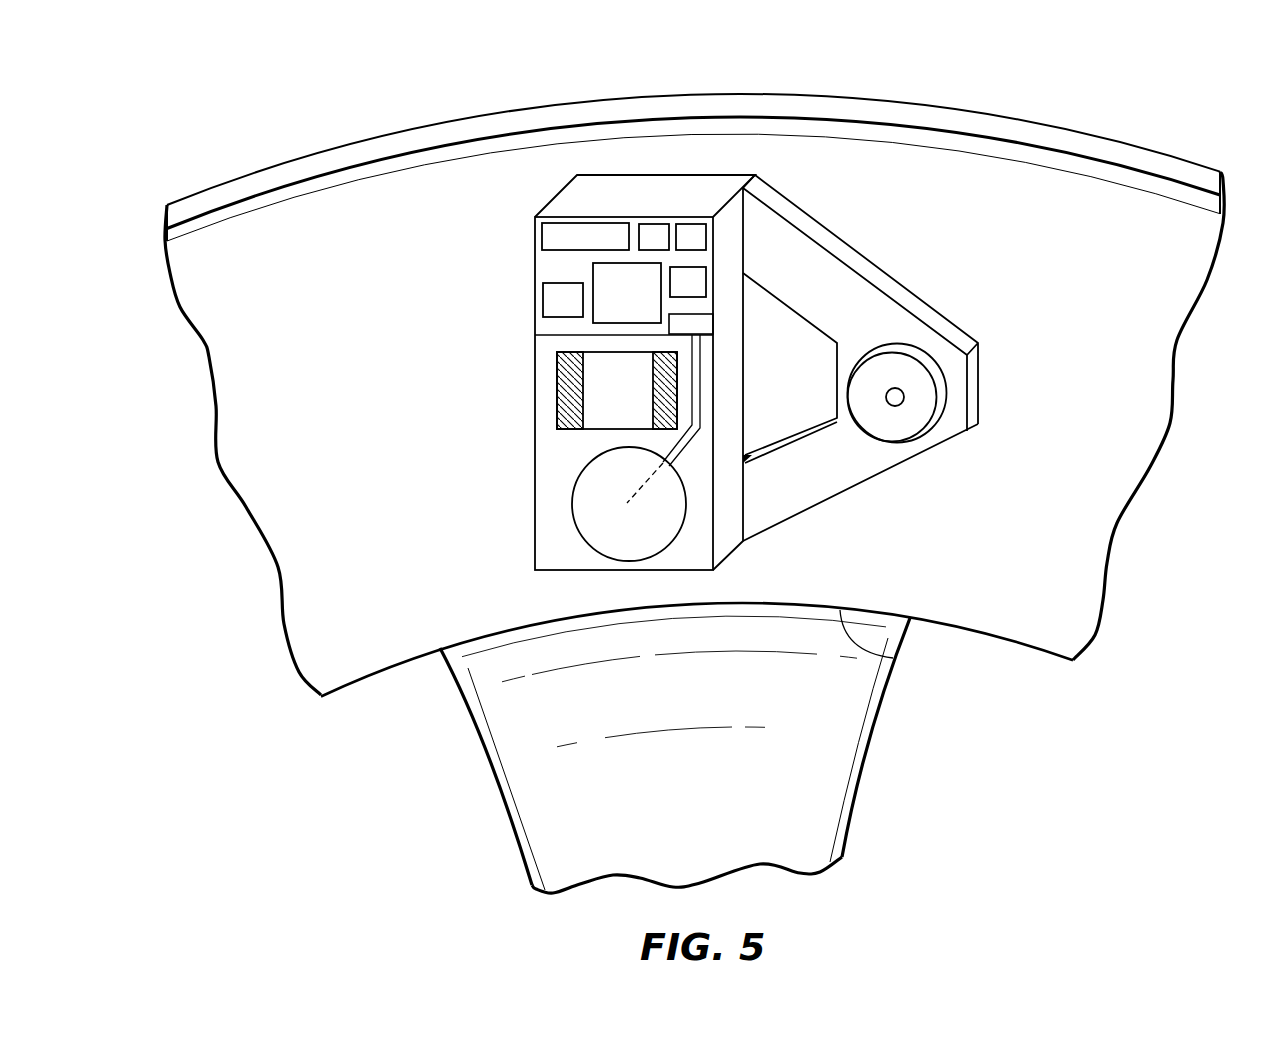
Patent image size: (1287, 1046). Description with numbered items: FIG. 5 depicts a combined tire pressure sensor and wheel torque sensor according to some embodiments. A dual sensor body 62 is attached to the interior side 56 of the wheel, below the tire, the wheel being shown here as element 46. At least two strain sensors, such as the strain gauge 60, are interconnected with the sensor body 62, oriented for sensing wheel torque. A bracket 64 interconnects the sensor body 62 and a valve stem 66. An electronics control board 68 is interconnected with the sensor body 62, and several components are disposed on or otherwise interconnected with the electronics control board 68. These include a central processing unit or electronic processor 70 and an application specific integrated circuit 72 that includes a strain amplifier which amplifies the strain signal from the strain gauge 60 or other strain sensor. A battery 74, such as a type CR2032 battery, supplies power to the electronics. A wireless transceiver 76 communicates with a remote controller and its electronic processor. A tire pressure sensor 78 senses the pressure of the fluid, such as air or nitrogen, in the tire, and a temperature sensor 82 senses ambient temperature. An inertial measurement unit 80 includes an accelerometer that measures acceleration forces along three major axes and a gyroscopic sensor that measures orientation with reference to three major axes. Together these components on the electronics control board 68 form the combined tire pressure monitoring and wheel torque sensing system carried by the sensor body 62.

The vehicle body panel 46 is at (188, 232).
The interior side 56 is at (893, 658).
The strain gauge 60 is at (660, 387).
The dual sensor body 62 is at (540, 178).
The bracket 64 is at (900, 296).
The valve stem 66 is at (912, 420).
The electronics control board 68 is at (547, 267).
The electronic processor 70 is at (620, 282).
The application specific integrated circuit 72 is at (552, 300).
The battery 74 is at (642, 543).
The wireless transceiver 76 is at (552, 236).
The tire pressure sensor 78 is at (690, 232).
The inertial measurement unit 80 is at (690, 283).
The temperature sensor 82 is at (653, 232).